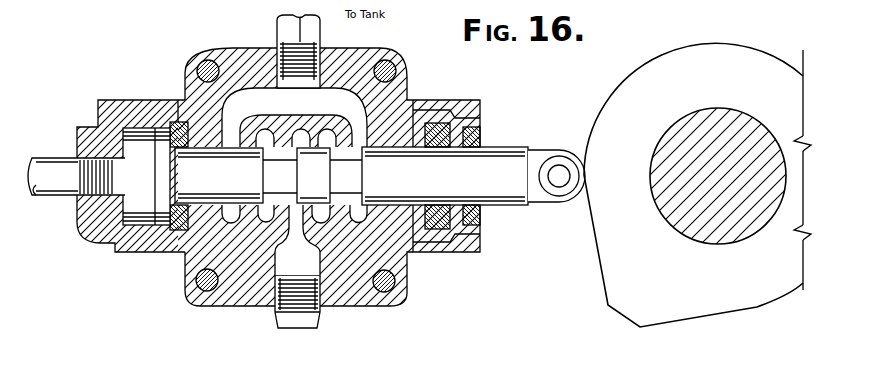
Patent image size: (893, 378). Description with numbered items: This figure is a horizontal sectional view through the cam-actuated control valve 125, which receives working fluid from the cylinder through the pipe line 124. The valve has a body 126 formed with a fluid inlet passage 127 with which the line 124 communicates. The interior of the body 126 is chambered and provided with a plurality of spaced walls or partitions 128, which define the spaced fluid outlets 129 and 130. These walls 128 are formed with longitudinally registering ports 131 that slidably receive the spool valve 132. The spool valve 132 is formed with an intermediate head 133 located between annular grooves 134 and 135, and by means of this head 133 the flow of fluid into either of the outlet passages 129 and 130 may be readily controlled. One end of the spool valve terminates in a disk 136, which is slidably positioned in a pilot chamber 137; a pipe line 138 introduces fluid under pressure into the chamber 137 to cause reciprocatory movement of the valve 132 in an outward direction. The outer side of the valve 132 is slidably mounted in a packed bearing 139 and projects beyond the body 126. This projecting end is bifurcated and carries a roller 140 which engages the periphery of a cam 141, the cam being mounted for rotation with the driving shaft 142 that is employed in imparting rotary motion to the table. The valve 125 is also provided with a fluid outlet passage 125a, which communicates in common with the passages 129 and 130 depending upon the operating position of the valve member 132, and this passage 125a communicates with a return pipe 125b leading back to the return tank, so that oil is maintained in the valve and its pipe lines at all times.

The pipe line 124 is at (297, 323).
The cam-actuated control valve 125 is at (413, 71).
The fluid outlet passage 125a is at (242, 110).
The return pipe 125b is at (301, 44).
The body 126 is at (407, 91).
The fluid inlet passage 127 is at (247, 303).
The walls or partitions 128 is at (308, 140).
The fluid outlet 129 is at (185, 266).
The fluid outlet 130 is at (323, 222).
The ports 131 is at (296, 175).
The spool valve 132 is at (445, 176).
The intermediate head 133 is at (331, 177).
The annular groove 134 is at (351, 176).
The annular groove 135 is at (352, 174).
The disk 136 is at (162, 140).
The pilot chamber 137 is at (128, 213).
The pipe line 138 is at (68, 162).
The packed bearing 139 is at (480, 110).
The roller 140 is at (563, 200).
The cam 141 is at (621, 312).
The driving shaft 142 is at (700, 236).